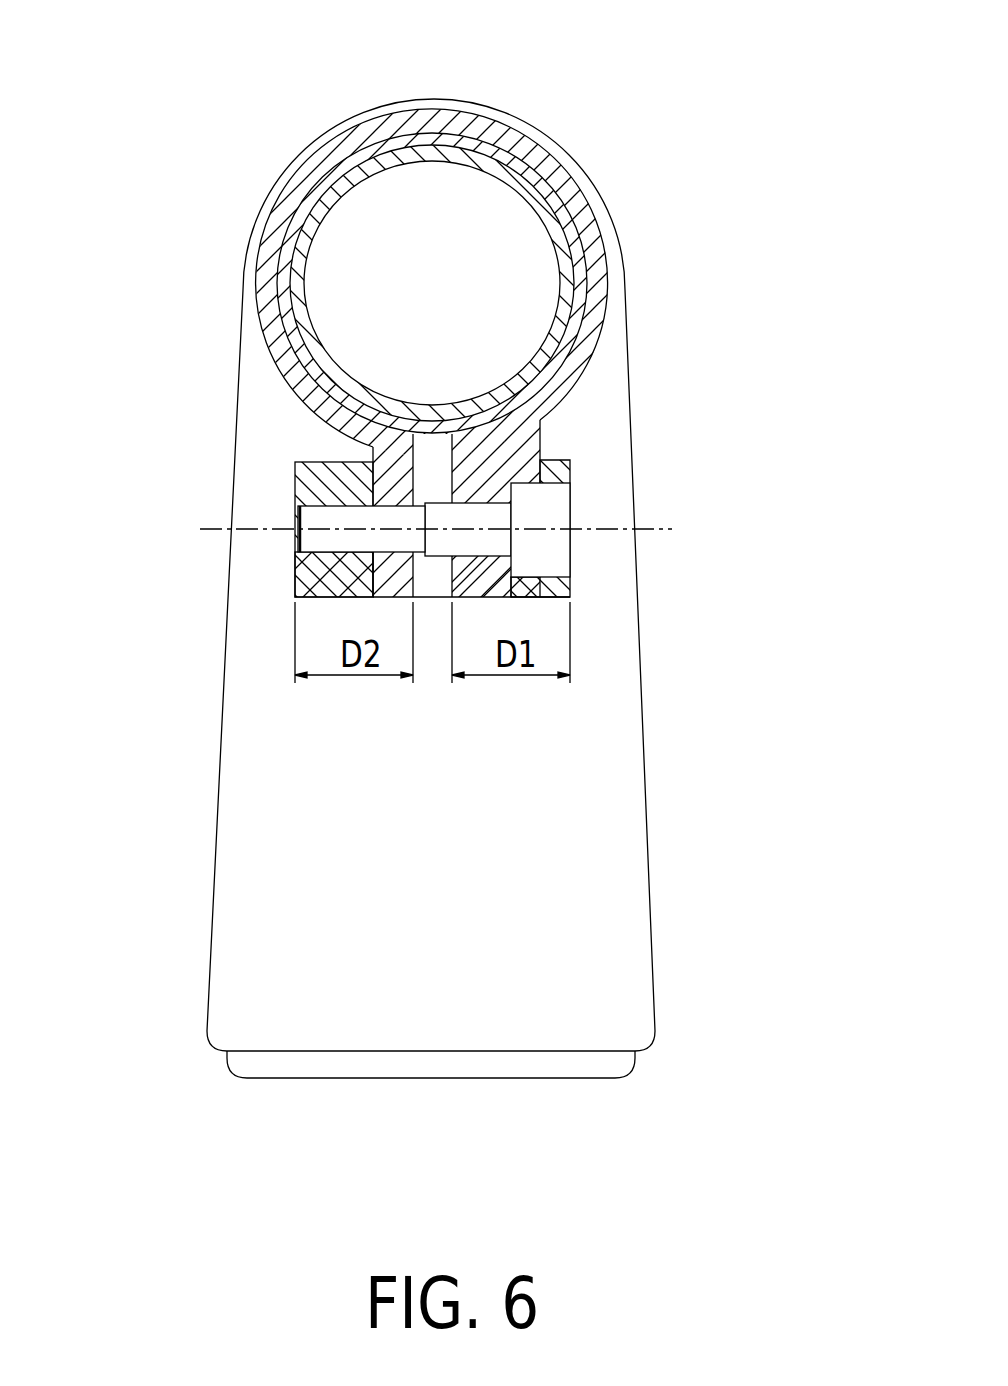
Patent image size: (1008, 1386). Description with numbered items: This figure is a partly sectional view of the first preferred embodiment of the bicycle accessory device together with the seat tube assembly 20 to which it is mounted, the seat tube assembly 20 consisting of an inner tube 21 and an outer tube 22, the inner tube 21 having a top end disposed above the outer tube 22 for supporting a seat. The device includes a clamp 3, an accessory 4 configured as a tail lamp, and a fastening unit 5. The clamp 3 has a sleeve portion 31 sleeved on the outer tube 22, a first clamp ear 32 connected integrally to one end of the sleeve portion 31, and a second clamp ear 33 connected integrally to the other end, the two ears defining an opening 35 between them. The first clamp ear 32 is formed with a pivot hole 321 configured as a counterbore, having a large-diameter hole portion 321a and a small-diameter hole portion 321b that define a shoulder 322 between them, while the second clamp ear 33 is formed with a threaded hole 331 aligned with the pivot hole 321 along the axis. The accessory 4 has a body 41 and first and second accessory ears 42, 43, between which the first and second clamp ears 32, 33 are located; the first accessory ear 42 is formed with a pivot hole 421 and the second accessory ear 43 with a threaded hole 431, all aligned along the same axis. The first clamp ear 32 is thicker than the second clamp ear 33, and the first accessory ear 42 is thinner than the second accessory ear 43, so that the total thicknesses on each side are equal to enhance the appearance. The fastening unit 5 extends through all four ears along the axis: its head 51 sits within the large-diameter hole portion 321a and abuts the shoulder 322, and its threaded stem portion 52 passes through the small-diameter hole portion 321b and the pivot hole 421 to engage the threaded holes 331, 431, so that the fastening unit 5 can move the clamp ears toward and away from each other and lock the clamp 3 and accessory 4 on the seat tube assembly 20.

The seat tube assembly 20 is at (432, 216).
The inner tube 21 is at (482, 162).
The outer tube 22 is at (524, 165).
The clamp 3 is at (482, 437).
The sleeve portion 31 is at (585, 213).
The first clamp ear 32 is at (482, 559).
The pivot hole 321 is at (490, 520).
The large-diameter hole portion 321a is at (538, 600).
The small-diameter hole portion 321b is at (502, 600).
The shoulder 322 is at (511, 490).
The second clamp ear 33 is at (386, 455).
The threaded hole 331 is at (392, 565).
The opening 35 is at (437, 575).
The accessory 4 is at (499, 588).
The body 41 is at (646, 392).
The first accessory ear 42 is at (661, 561).
The pivot hole 421 is at (558, 557).
The second accessory ear 43 is at (246, 550).
The threaded hole 431 is at (305, 580).
The fastening unit 5 is at (418, 547).
The head 51 is at (661, 555).
The threaded stem portion 52 is at (317, 538).